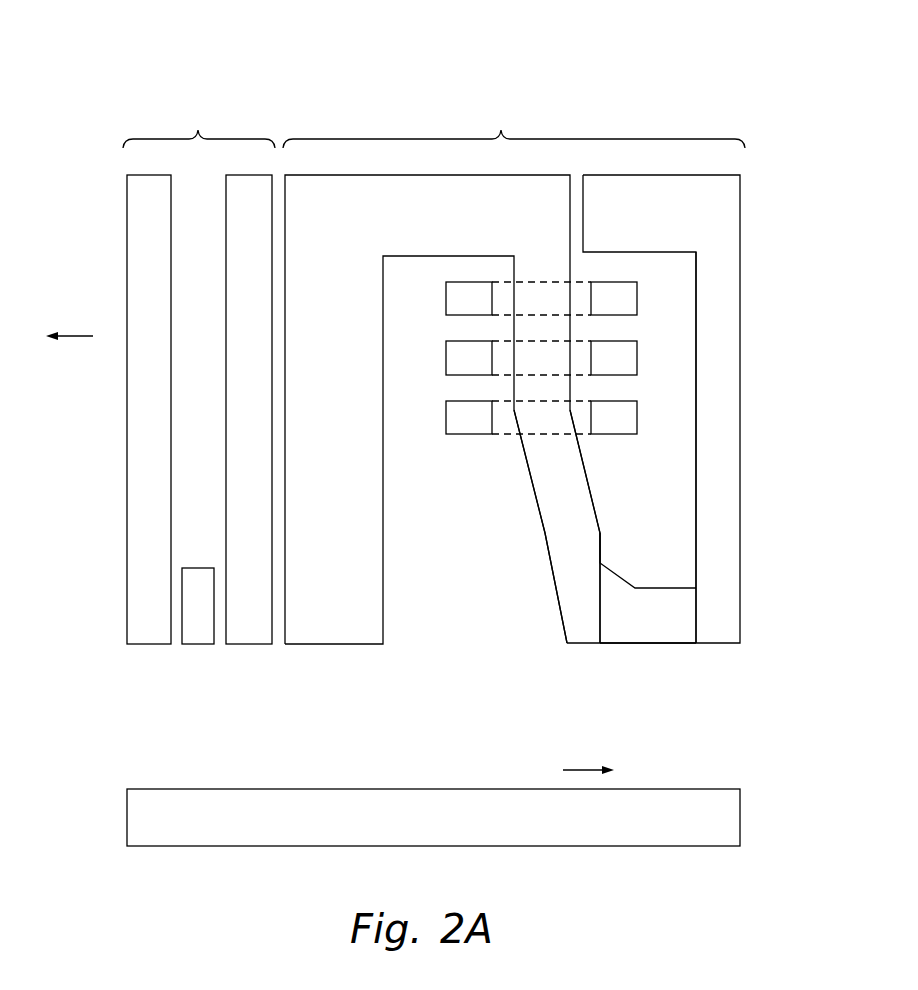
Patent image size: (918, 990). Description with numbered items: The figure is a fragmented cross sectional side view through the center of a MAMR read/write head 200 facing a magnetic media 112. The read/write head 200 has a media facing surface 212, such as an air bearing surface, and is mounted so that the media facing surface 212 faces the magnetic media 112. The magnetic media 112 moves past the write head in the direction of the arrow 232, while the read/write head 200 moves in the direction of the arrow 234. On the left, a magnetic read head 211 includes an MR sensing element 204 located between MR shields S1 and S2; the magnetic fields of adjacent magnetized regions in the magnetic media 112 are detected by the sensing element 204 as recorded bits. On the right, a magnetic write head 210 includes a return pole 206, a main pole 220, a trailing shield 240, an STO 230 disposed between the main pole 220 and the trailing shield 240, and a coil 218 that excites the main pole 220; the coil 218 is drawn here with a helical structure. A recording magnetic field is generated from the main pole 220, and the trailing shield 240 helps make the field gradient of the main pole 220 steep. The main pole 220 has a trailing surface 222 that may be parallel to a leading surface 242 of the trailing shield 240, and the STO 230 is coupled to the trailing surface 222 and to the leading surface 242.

The MAMR read/write head 200 is at (120, 26).
The magnetic read head 211 is at (199, 126).
The magnetic write head 210 is at (514, 126).
The MR shield S1 is at (145, 644).
The MR shield S2 is at (232, 644).
The MR sensing element 204 is at (192, 644).
The return pole 206 is at (309, 644).
The coil 218 is at (470, 434).
The main pole 220 is at (562, 592).
The trailing surface 222 is at (602, 550).
The media facing surface 212 is at (601, 645).
The STO 230 is at (649, 630).
The trailing shield 240 is at (730, 613).
The leading surface 242 is at (696, 515).
The arrow 234 is at (80, 333).
The arrow 232 is at (580, 768).
The magnetic media 112 is at (742, 810).